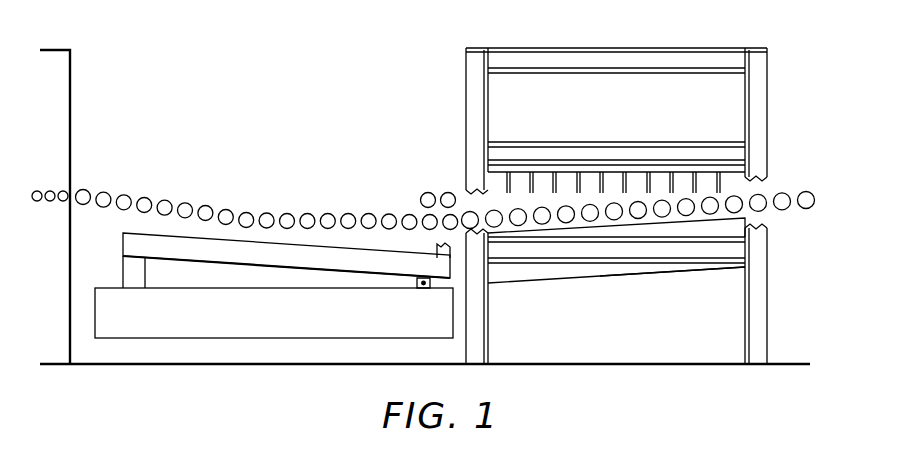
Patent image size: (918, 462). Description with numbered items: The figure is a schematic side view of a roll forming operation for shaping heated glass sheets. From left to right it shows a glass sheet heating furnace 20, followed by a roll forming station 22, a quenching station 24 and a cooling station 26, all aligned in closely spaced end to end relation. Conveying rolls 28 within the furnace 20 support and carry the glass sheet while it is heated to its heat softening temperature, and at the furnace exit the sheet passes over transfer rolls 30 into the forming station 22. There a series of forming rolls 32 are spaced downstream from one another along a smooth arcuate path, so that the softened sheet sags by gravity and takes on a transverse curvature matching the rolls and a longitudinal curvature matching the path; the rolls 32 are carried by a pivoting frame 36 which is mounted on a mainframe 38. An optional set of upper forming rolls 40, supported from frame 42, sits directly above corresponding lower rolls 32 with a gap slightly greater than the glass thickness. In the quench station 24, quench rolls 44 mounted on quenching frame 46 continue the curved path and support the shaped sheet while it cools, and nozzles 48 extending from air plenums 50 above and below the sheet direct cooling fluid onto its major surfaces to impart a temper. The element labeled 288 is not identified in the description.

The glass sheet heating furnace 20 is at (60, 18).
The roll forming station 22 is at (303, 105).
The quenching station 24 is at (632, 13).
The cooling station 26 is at (850, 58).
The conveying rolls 28 is at (50, 203).
The transfer rolls 30 is at (101, 191).
The forming rolls 32 is at (186, 203).
The pivoting frame 36 is at (302, 270).
The mainframe 38 is at (180, 340).
The upper forming rolls 40 is at (447, 192).
The frame 42 is at (518, 281).
The quench rolls 44 is at (616, 221).
The quenching frame 46 is at (676, 270).
The nozzles 48 is at (536, 187).
The air plenum 50 is at (695, 140).
The stop block 288 is at (445, 228).